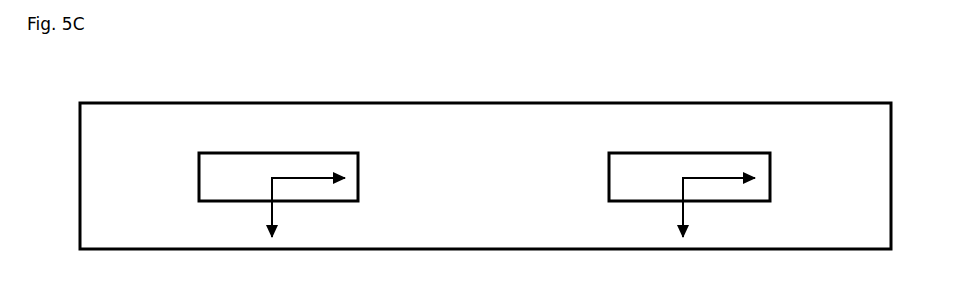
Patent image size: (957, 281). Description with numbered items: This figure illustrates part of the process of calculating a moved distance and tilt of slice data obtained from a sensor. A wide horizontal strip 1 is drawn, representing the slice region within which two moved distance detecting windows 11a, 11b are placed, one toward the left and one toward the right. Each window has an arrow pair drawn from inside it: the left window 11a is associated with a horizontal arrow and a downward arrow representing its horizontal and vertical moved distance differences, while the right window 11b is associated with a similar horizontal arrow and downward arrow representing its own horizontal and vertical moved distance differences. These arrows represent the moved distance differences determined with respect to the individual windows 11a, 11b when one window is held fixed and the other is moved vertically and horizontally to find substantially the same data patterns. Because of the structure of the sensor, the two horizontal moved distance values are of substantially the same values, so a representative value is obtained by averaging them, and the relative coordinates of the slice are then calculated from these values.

The substrate 1 is at (395, 102).
The moved distance detecting window 11a is at (238, 152).
The moved distance detecting window 11b is at (663, 152).